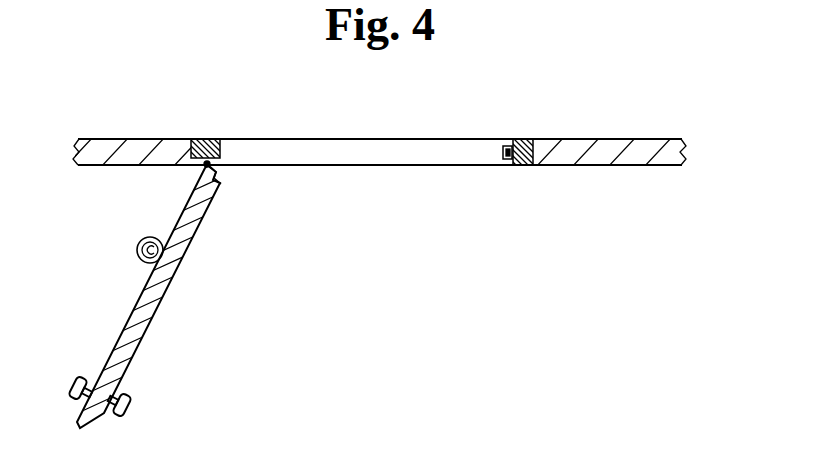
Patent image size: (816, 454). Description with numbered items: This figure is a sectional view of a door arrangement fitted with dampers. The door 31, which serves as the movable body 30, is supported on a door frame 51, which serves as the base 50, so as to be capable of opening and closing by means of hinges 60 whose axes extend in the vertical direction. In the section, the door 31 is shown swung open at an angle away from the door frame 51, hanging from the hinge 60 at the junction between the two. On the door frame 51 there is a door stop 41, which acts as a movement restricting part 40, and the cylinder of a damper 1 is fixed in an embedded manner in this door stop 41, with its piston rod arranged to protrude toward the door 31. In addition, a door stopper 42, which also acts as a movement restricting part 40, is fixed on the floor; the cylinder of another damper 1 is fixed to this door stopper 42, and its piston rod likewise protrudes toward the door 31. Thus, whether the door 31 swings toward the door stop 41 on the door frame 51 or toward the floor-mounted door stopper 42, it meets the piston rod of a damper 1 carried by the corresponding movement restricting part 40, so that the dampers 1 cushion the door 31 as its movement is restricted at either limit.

The damper 1 is at (140, 256).
The hinges 60 is at (207, 165).
The movable body 30 is at (176, 296).
The door 31 is at (147, 335).
The movement restricting part 40 is at (308, 166).
The door stop 41 is at (510, 139).
The door stopper 42 is at (150, 237).
The base 50 is at (386, 188).
The door frame 51 is at (622, 160).